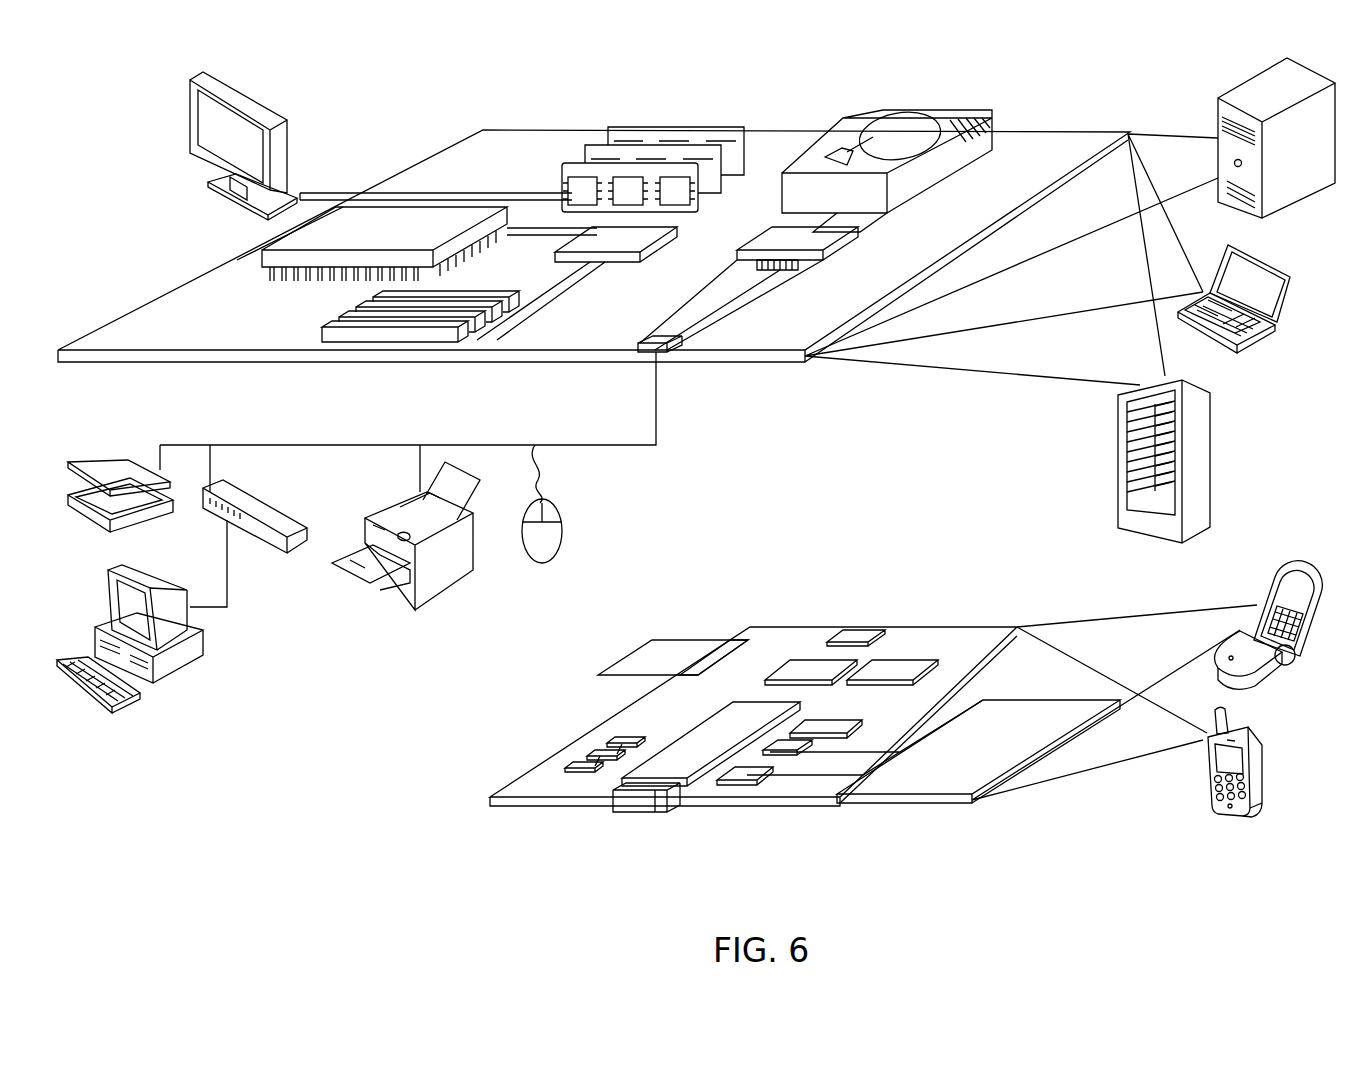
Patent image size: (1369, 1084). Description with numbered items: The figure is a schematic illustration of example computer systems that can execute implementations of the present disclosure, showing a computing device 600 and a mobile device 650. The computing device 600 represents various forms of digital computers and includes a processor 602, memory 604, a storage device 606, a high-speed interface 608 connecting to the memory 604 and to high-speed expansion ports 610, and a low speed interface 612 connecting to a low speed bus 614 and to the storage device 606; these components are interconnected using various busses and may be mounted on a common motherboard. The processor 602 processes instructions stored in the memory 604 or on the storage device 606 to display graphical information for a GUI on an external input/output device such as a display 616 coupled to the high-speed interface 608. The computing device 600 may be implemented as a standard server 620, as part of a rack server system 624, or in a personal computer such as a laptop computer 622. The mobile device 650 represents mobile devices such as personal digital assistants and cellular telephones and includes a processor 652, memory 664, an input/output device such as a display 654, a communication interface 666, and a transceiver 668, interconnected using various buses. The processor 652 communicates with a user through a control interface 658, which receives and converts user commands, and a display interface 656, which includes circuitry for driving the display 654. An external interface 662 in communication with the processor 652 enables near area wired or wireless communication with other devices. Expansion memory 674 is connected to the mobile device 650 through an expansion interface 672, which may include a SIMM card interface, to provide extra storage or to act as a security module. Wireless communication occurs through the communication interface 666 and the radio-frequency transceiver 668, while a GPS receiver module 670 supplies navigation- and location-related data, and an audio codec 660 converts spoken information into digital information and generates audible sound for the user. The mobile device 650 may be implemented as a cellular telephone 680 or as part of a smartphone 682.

The computing device 600 is at (392, 92).
The processor 602 is at (240, 260).
The memory 604 is at (632, 123).
The storage device 606 is at (880, 111).
The high-speed interface 608 is at (590, 242).
The high-speed expansion ports 610 is at (340, 320).
The low speed interface 612 is at (780, 247).
The low speed bus 614 is at (667, 350).
The display 616 is at (203, 80).
The standard server 620 is at (1218, 117).
The laptop computer 622 is at (1282, 275).
The rack server system 624 is at (1118, 487).
The mobile device 650 is at (462, 820).
The processor 652 is at (680, 765).
The display 654 is at (935, 785).
The display interface 656 is at (753, 788).
The control interface 658 is at (772, 760).
The audio codec 660 is at (818, 727).
The external interface 662 is at (643, 812).
The memory 664 is at (587, 760).
The communication interface 666 is at (810, 668).
The transceiver 668 is at (892, 668).
The GPS receiver module 670 is at (867, 625).
The expansion interface 672 is at (728, 642).
The expansion memory 674 is at (655, 642).
The cellular telephone 680 is at (1268, 548).
The smartphone 682 is at (1207, 767).